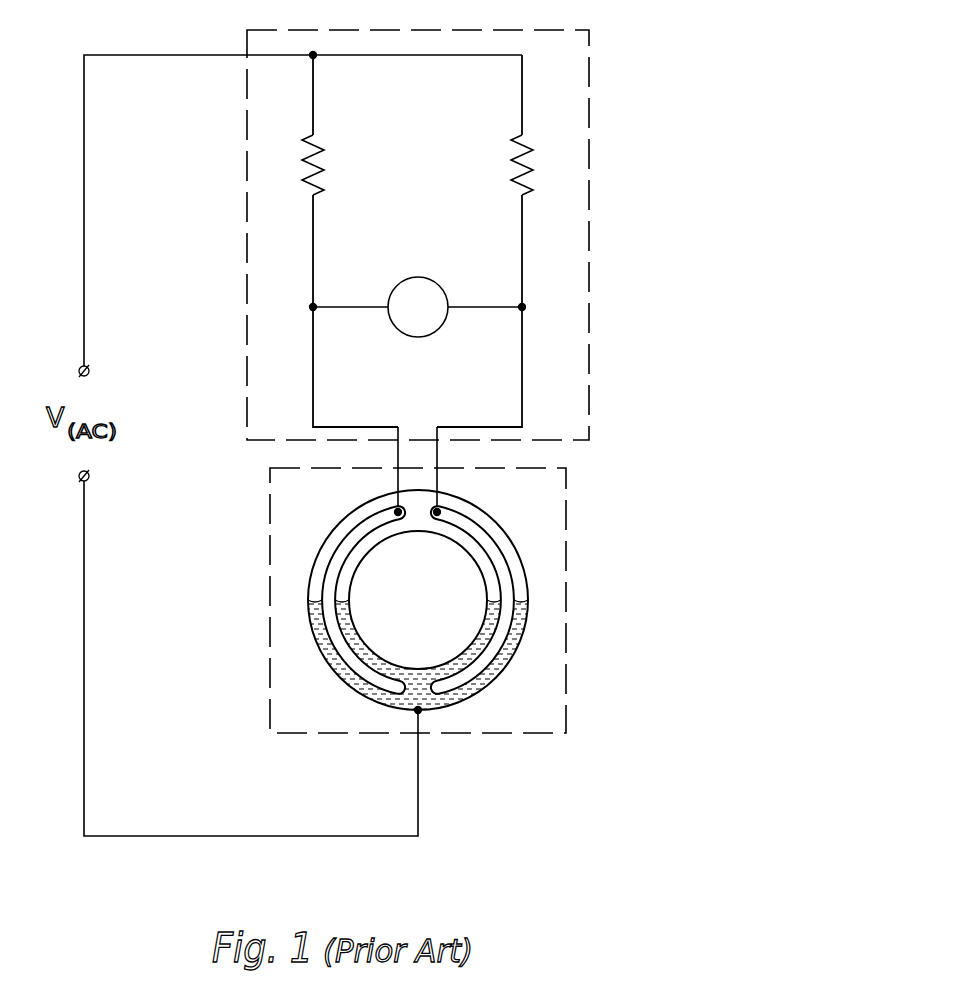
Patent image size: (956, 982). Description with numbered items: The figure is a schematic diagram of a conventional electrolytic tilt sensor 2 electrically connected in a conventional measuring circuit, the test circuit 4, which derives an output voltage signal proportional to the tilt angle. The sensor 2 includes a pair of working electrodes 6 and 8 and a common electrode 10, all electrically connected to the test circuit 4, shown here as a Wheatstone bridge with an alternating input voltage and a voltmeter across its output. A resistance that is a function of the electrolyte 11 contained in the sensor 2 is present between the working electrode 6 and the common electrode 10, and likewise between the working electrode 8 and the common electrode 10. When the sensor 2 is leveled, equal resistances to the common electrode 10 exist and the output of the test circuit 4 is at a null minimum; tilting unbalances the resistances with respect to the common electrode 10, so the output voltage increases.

The tilt sensor 2 is at (421, 600).
The test circuit 4 is at (589, 113).
The working electrode 6 is at (337, 545).
The working electrode 8 is at (502, 557).
The common electrode 10 is at (490, 687).
The electrolyte 11 is at (517, 633).